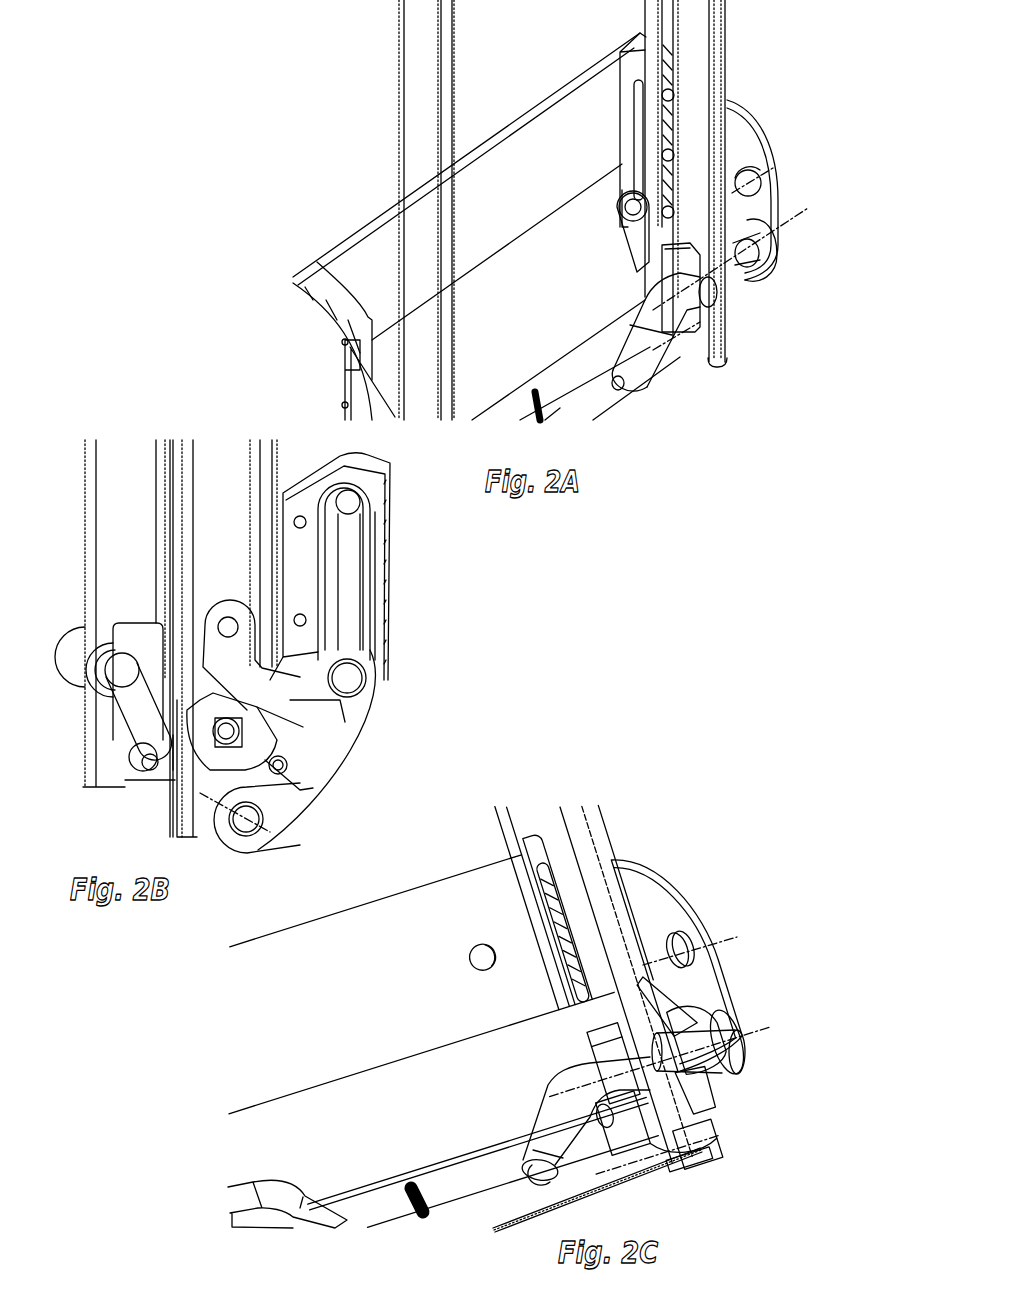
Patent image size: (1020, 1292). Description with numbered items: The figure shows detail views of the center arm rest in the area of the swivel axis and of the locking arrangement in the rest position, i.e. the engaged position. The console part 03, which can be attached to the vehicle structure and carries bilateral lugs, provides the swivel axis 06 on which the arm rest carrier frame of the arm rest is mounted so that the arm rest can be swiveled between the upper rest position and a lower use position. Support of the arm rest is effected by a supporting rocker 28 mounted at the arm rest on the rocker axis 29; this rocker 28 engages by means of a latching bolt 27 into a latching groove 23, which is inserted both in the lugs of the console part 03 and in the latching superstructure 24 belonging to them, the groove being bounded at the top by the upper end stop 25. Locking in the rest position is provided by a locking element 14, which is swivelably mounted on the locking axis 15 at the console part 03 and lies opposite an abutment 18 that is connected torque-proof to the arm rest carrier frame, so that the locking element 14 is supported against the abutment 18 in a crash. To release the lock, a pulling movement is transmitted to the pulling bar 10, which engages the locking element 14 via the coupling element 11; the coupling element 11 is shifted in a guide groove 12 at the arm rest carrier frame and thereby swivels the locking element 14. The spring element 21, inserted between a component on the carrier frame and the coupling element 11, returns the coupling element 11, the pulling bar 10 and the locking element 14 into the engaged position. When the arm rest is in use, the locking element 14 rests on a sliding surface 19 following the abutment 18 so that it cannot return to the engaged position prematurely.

In FIG. 2A, the console part 03 is at (372, 257).
In FIG. 2C, the console part 03 is at (670, 913).
In FIG. 2A, the swivel axis 06 is at (740, 263).
In FIG. 2C, the swivel axis 06 is at (512, 1112).
In FIG. 2A, the pulling bar 10 is at (652, 73).
In FIG. 2A, the coupling element 11 is at (590, 347).
In FIG. 2B, the coupling element 11 is at (283, 767).
In FIG. 2C, the coupling element 11 is at (703, 1118).
In FIG. 2C, the guide groove 12 is at (565, 1063).
In FIG. 2B, the locking element 14 is at (297, 735).
In FIG. 2C, the locking element 14 is at (697, 1087).
In FIG. 2A, the locking axis 15 is at (782, 153).
In FIG. 2C, the locking axis 15 is at (730, 937).
In FIG. 2B, the abutment 18 is at (245, 708).
In FIG. 2C, the abutment 18 is at (697, 1013).
In FIG. 2B, the sliding surface 19 is at (163, 780).
In FIG. 2C, the sliding surface 19 is at (740, 1058).
In FIG. 2A, the spring element 21 is at (531, 393).
In FIG. 2B, the latching groove 23 is at (348, 613).
In FIG. 2B, the latching superstructure 24 is at (377, 597).
In FIG. 2B, the upper end stop 25 is at (348, 505).
In FIG. 2B, the latching bolt 27 is at (348, 680).
In FIG. 2B, the supporting rocker 28 is at (343, 723).
In FIG. 2C, the supporting rocker 28 is at (630, 1168).
In FIG. 2B, the rocker axis 29 is at (260, 865).